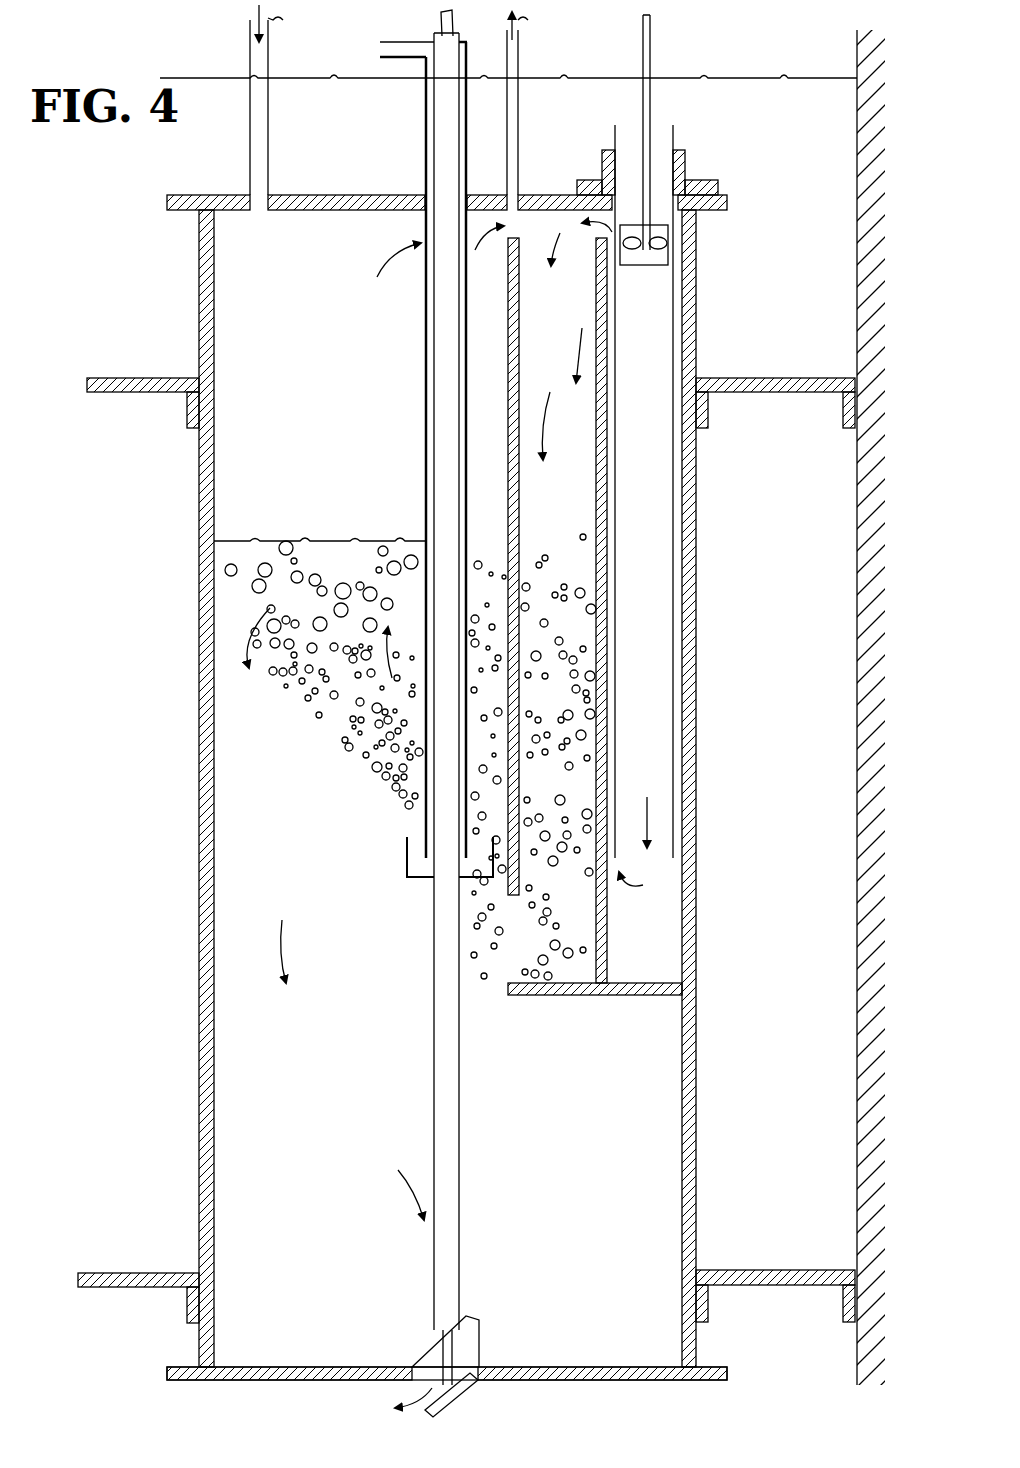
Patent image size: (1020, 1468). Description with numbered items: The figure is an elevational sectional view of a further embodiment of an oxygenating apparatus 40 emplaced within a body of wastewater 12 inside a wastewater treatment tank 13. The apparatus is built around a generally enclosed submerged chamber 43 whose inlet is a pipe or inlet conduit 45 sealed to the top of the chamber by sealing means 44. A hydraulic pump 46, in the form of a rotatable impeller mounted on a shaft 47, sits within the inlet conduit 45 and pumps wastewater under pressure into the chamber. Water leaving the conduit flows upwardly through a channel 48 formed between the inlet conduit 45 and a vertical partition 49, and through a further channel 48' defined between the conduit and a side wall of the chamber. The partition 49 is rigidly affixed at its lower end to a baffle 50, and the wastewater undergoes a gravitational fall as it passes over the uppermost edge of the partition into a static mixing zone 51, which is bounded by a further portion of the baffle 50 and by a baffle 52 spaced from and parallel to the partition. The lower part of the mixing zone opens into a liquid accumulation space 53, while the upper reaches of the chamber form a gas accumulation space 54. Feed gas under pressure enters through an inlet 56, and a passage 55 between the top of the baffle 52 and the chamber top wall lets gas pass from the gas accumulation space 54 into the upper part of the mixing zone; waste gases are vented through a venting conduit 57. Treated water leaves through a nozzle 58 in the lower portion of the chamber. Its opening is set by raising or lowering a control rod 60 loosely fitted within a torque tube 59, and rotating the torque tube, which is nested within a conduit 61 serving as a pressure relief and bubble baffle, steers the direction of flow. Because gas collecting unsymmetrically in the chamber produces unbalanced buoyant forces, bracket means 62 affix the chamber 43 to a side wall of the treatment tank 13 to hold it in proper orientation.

The body of wastewater 12 is at (172, 167).
The wastewater treatment tank 13 is at (857, 185).
The oxygenating apparatus 40 is at (199, 312).
The submerged chamber 43 is at (696, 348).
The sealing means 44 is at (705, 188).
The inlet conduit 45 is at (673, 132).
The hydraulic pump 46 is at (668, 258).
The shaft 47 is at (650, 45).
The channel 48 is at (616, 505).
The channel 48' is at (648, 491).
The partition 49 is at (602, 580).
The baffle 50 is at (556, 998).
The static mixing zone 51 is at (572, 752).
The baffle 52 is at (519, 518).
The liquid accumulation space 53 is at (330, 1047).
The gas accumulation space 54 is at (330, 357).
The passage 55 is at (518, 218).
The inlet 56 is at (268, 110).
The venting conduit 57 is at (518, 82).
The nozzle 58 is at (479, 1352).
The torque tube 59 is at (434, 113).
The control rod 60 is at (441, 20).
The conduit 61 is at (426, 176).
The bracket means 62 is at (160, 392).